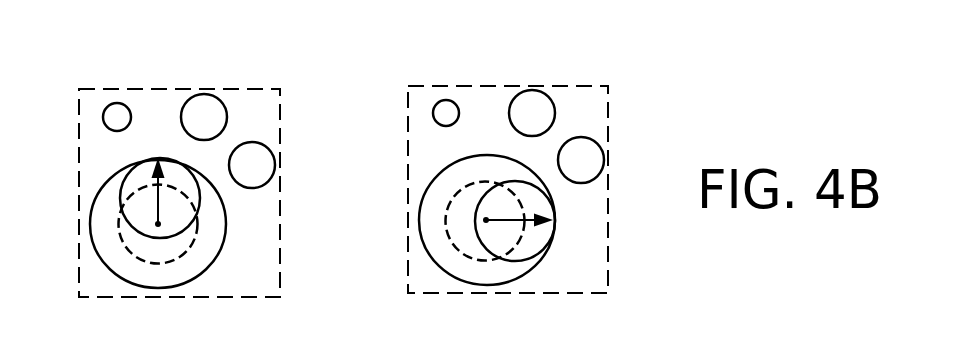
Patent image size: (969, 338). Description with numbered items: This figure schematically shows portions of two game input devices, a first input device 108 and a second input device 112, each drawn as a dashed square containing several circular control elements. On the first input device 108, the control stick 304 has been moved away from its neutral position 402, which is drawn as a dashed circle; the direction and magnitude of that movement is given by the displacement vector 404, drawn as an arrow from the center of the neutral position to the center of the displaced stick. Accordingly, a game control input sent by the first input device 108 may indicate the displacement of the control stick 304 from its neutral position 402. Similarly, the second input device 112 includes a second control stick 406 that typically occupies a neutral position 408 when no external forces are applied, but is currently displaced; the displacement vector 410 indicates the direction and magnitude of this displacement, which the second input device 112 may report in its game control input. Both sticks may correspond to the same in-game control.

The first input device 108 is at (94, 48).
The second input device 112 is at (435, 41).
The control stick 304 is at (125, 172).
The neutral position 402 is at (127, 248).
The displacement vector 404 is at (160, 201).
The second control stick 406 is at (527, 254).
The neutral position 408 is at (453, 200).
The displacement vector 410 is at (507, 218).